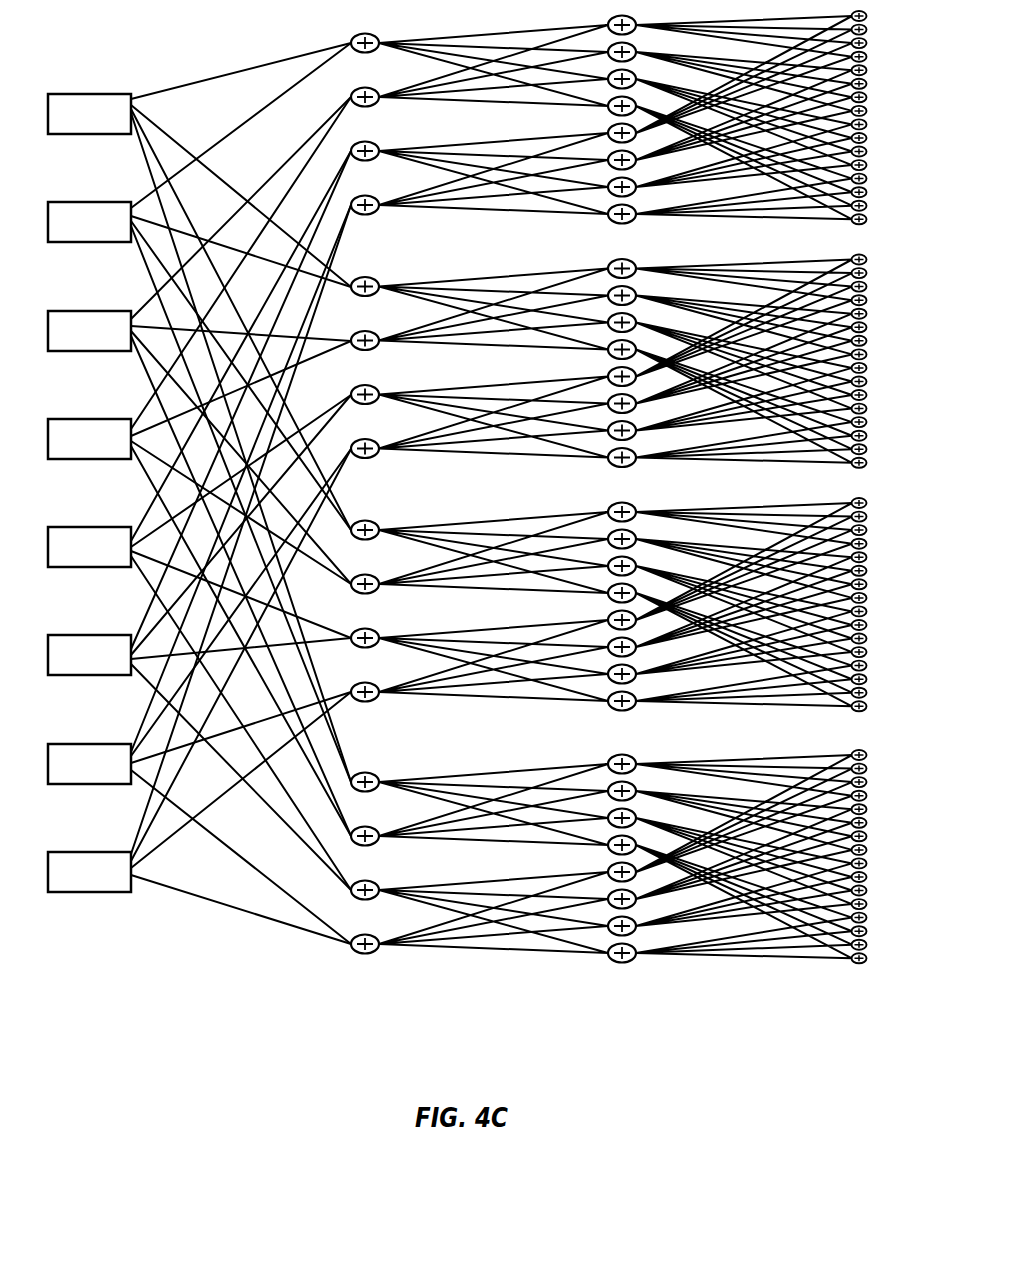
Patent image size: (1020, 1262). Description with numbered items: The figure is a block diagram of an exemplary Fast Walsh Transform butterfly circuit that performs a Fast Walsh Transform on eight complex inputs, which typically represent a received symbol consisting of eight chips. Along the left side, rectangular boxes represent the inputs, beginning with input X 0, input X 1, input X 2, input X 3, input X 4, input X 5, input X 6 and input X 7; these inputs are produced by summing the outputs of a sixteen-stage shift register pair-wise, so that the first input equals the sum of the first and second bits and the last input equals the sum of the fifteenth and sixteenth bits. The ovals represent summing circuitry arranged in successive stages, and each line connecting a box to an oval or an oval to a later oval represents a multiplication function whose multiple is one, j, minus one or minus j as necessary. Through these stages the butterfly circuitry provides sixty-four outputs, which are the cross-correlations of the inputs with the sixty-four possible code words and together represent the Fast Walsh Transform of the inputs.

The input x0 0 is at (199, 412).
The input x1 1 is at (199, 412).
The input x2 2 is at (199, 466).
The input x3 3 is at (199, 466).
The input x4 4 is at (199, 520).
The input x5 5 is at (199, 520).
The input x6 6 is at (199, 574).
The input x7 7 is at (199, 574).